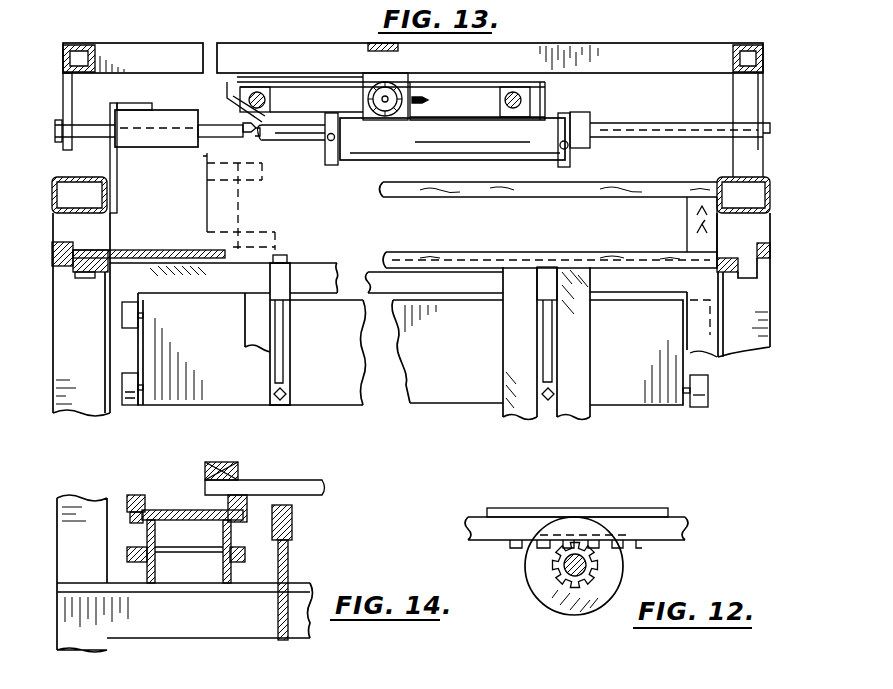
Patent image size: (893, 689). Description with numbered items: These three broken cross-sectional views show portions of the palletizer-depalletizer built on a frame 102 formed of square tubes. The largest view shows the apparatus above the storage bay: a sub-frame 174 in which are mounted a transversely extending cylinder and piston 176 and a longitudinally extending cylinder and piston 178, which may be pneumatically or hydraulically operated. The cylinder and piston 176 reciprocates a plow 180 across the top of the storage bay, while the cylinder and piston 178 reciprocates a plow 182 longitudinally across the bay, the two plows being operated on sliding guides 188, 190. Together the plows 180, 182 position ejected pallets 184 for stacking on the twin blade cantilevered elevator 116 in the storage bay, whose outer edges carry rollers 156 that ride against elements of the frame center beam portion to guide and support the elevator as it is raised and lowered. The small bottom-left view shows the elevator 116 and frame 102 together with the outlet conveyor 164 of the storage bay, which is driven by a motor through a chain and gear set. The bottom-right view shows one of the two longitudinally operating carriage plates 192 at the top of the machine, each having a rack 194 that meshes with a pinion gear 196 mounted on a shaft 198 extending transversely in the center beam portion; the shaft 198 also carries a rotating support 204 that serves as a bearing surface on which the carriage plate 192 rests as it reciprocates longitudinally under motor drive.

In FIG. 13, the frame 102 is at (770, 177).
In FIG. 14, the frame 102 is at (84, 498).
In FIG. 13, the twin blade cantilevered elevator 116 is at (287, 270).
In FIG. 14, the twin blade cantilevered elevator 116 is at (293, 523).
In FIG. 13, the rollers 156 is at (124, 380).
In FIG. 14, the outlet conveyor 164 is at (162, 510).
In FIG. 13, the sub-frame 174 is at (203, 45).
In FIG. 13, the transversely extending cylinder and piston 176 is at (280, 136).
In FIG. 13, the longitudinally extending cylinder and piston 178 is at (373, 90).
In FIG. 13, the plow 180 is at (206, 191).
In FIG. 13, the plow 182 is at (467, 117).
In FIG. 13, the ejected pallets 184 is at (247, 208).
In FIG. 14, the ejected pallets 184 is at (279, 480).
In FIG. 13, the sliding guide 188 is at (226, 122).
In FIG. 13, the sliding guide 190 is at (258, 90).
In FIG. 13, the carriage plate 192 is at (170, 232).
In FIG. 12, the carriage plate 192 is at (556, 508).
In FIG. 13, the rack 194 is at (82, 275).
In FIG. 12, the rack 194 is at (520, 542).
In FIG. 12, the pinion gear 196 is at (565, 588).
In FIG. 12, the shaft 198 is at (560, 573).
In FIG. 12, the rotating support 204 is at (616, 578).